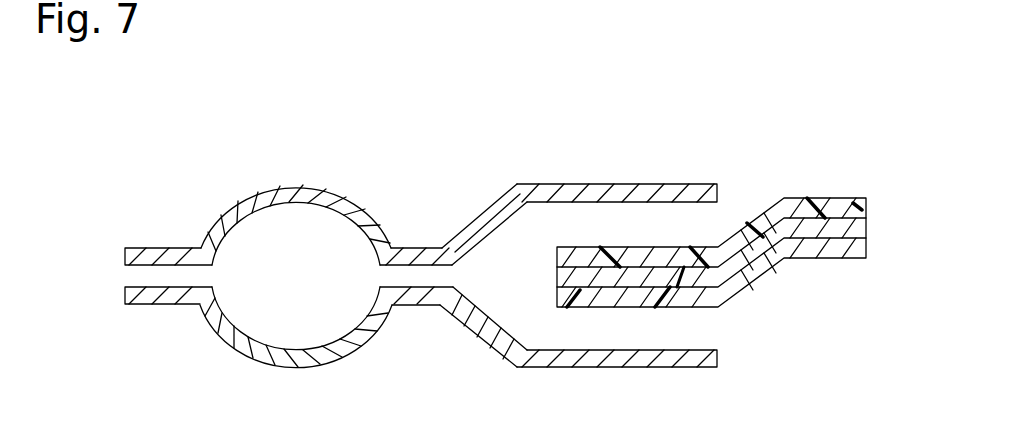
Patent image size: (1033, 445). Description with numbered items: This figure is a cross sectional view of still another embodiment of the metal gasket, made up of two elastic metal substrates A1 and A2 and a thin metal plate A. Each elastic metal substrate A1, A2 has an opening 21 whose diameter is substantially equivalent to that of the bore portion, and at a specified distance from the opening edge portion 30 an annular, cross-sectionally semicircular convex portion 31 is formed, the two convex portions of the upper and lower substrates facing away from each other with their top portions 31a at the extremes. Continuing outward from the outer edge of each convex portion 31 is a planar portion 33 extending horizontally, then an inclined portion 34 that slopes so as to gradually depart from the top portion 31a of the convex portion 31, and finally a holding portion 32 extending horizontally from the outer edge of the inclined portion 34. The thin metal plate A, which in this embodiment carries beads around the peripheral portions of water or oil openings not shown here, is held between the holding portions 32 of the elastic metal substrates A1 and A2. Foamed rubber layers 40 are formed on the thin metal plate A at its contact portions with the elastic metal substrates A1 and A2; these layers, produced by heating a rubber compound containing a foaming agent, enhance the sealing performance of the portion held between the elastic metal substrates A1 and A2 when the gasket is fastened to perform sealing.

The opening 21 is at (100, 287).
The opening edge portion 30 is at (125, 251).
The convex portion 31 is at (229, 204).
The top portion of convex portion 31a is at (296, 186).
The holding portion 32 is at (703, 185).
The planar portion 33 is at (414, 247).
The inclined portion 34 is at (462, 214).
The foamed rubber layer 40 is at (845, 198).
The thin metal plate A is at (741, 230).
The elastic metal substrate A1 is at (147, 249).
The elastic metal substrate A2 is at (147, 306).